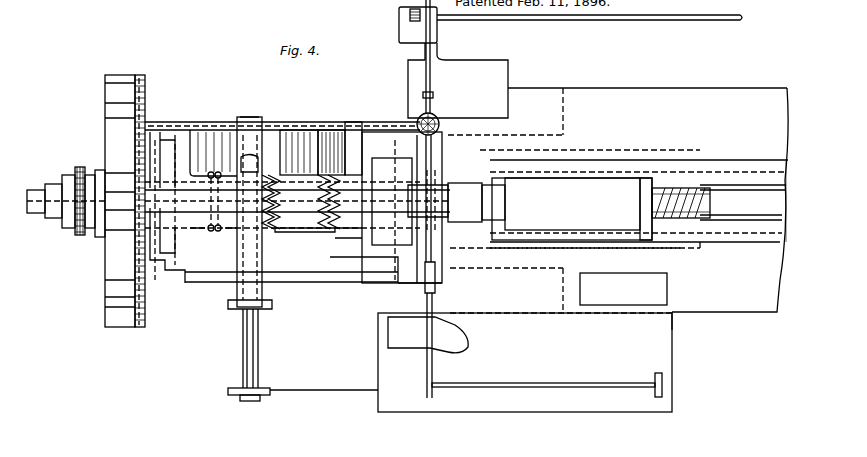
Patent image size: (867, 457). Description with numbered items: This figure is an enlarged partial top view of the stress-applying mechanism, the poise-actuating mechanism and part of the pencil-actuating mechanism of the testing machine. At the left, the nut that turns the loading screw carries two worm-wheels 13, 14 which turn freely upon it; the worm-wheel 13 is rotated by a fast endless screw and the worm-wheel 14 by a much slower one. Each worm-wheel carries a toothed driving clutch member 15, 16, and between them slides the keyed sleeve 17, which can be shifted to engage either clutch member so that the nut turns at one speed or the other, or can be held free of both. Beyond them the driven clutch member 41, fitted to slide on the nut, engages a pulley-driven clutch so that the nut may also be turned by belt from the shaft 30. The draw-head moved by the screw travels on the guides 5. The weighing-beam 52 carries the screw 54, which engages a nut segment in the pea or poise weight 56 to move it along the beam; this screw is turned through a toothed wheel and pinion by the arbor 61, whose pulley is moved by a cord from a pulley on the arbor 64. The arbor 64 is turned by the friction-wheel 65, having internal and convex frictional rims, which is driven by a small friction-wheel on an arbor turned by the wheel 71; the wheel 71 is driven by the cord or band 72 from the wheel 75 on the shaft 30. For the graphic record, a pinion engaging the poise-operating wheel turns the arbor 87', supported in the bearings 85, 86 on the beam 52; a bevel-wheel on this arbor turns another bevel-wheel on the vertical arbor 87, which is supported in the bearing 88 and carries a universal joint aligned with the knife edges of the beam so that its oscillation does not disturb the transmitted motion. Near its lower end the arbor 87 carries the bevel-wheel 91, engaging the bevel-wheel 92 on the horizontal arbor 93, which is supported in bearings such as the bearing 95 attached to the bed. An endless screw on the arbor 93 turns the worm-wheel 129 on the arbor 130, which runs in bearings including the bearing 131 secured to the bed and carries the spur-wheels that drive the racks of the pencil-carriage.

The driven member of clutch 41 is at (97, 237).
The bearing 85 is at (185, 140).
The arbor 87' is at (333, 139).
The bearing 86 is at (368, 124).
The bearing 88 is at (416, 136).
The vertical arbor 87 is at (428, 137).
The horizontal arbor 93 is at (432, 86).
The bevel-wheel 92 is at (434, 95).
The bevel-wheel 91 is at (440, 120).
The bearing 95 is at (427, 112).
The worm-wheel 129 is at (418, 25).
The bearing 131 is at (408, 12).
The arbor 130 is at (590, 21).
The beam 52 is at (760, 192).
The screw 54 is at (700, 186).
The guides 5 is at (712, 228).
The pea or poise weight 56 is at (579, 209).
The worm-wheel 13 is at (249, 240).
The toothed driving member of clutch 15 is at (272, 236).
The sleeve 17 is at (304, 234).
The toothed driving member of clutch 16 is at (330, 234).
The worm-wheel 14 is at (352, 264).
The arbor 61 is at (320, 284).
The shaft 30 is at (258, 345).
The wheel 75 is at (230, 394).
The cord or band 72 is at (340, 392).
The friction-wheel 65 is at (430, 342).
The arbor 64 is at (580, 388).
The wheel 71 is at (658, 372).